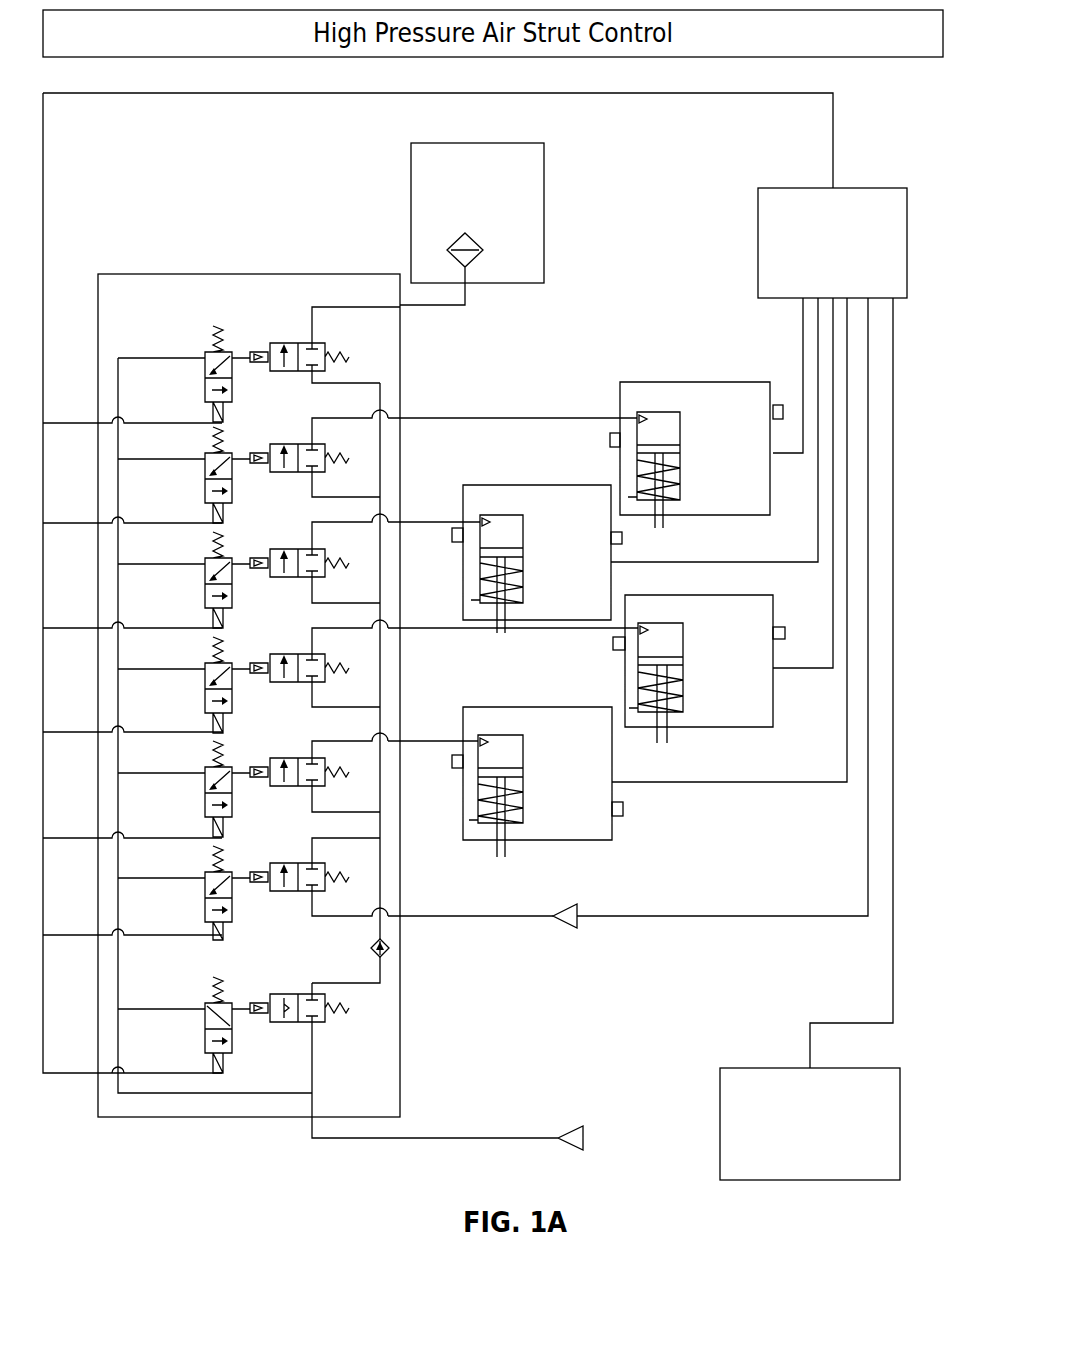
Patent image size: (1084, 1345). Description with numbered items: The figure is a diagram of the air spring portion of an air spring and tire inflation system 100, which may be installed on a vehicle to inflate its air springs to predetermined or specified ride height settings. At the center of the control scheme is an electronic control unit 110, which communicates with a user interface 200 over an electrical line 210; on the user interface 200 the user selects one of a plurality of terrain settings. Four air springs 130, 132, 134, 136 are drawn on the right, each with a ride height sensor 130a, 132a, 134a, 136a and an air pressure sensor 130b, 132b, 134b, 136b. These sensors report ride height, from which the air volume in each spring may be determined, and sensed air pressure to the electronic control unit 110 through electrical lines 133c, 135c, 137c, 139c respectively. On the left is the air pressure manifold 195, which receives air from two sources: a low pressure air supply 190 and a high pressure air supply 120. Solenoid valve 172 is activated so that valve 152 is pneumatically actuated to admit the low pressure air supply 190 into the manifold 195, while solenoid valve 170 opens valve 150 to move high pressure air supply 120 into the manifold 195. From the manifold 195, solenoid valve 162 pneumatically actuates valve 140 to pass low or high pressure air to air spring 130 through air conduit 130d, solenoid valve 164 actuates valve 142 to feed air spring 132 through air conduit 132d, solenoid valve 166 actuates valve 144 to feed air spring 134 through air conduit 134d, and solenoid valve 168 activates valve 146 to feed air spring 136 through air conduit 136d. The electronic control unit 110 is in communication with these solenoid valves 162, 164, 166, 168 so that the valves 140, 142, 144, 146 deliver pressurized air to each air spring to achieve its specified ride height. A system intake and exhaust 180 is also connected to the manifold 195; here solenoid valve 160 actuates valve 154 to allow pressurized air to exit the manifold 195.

The air spring and tire inflation system 100 is at (850, 142).
The electronic control unit 110 is at (907, 238).
The high pressure air supply 120 is at (635, 920).
The air spring 130 is at (668, 382).
The ride height sensor 130a is at (779, 405).
The air pressure sensor 130b is at (610, 440).
The air conduit 130d is at (507, 418).
The air spring 132 is at (503, 485).
The ride height sensor 132a is at (622, 538).
The air pressure sensor 132b is at (452, 535).
The air conduit 132d is at (445, 522).
The electrical line 133c is at (803, 335).
The air spring 134 is at (743, 595).
The ride height sensor 134a is at (785, 627).
The air pressure sensor 134b is at (612, 643).
The air conduit 134d is at (590, 630).
The electrical line 135c is at (818, 377).
The air spring 136 is at (470, 707).
The ride height sensor 136a is at (625, 810).
The air pressure sensor 136b is at (452, 762).
The air conduit 136d is at (443, 741).
The electrical line 137c is at (833, 460).
The electrical line 139c is at (848, 673).
The valve 140 is at (285, 444).
The valve 142 is at (285, 549).
The valve 144 is at (285, 654).
The valve 146 is at (285, 758).
The valve 150 is at (285, 863).
The valve 152 is at (290, 994).
The valve 154 is at (288, 343).
The solenoid valve 160 is at (205, 375).
The solenoid valve 162 is at (205, 476).
The solenoid valve 164 is at (205, 581).
The solenoid valve 166 is at (205, 686).
The solenoid valve 168 is at (205, 790).
The solenoid valve 170 is at (205, 895).
The solenoid valve 172 is at (205, 1028).
The system intake and exhaust 180 is at (544, 195).
The low pressure air supply 190 is at (462, 1138).
The air pressure manifold 195 is at (243, 274).
The user interface 200 is at (900, 1090).
The electrical line 210 is at (893, 727).